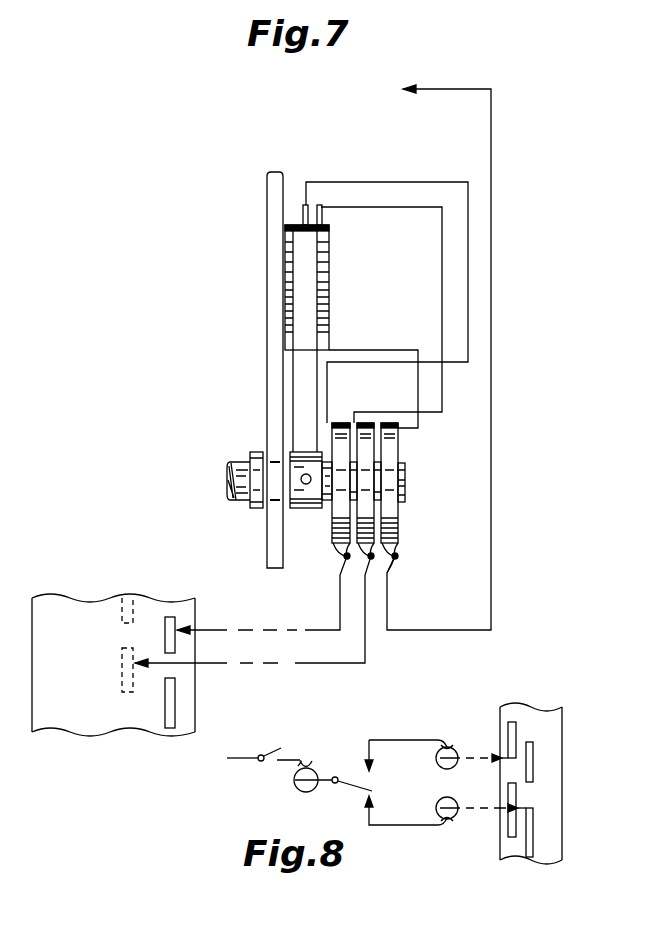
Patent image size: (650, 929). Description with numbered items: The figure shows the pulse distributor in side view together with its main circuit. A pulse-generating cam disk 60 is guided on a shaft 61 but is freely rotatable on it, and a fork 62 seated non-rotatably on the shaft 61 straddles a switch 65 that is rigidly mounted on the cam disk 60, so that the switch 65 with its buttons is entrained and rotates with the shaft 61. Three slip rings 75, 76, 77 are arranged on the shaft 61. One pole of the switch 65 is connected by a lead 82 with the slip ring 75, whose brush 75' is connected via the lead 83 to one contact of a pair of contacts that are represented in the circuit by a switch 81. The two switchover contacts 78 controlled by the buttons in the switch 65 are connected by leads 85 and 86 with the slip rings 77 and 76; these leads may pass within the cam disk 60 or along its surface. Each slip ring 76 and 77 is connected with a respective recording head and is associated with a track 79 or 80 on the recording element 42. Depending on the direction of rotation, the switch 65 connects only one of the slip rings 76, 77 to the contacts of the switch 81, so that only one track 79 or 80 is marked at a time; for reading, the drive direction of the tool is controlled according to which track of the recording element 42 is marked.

In FIG. 7, the recording element 42 is at (56, 722).
In FIG. 8, the recording element 42 is at (562, 763).
In FIG. 7, the cam disk 60 is at (267, 201).
In FIG. 7, the shaft 61 is at (240, 497).
In FIG. 7, the fork 62 is at (302, 388).
In FIG. 7, the switch 65 is at (288, 222).
In FIG. 7, the slip ring 75 is at (398, 475).
In FIG. 8, the slip ring 75 is at (294, 788).
In FIG. 7, the brush 75' is at (415, 580).
In FIG. 7, the slip ring 76 is at (366, 423).
In FIG. 8, the slip ring 76 is at (440, 766).
In FIG. 7, the slip ring 77 is at (341, 423).
In FIG. 8, the slip ring 77 is at (447, 815).
In FIG. 8, the switchover contacts 78 is at (348, 785).
In FIG. 7, the track 79 is at (131, 698).
In FIG. 8, the track 79 is at (508, 734).
In FIG. 7, the track 80 is at (170, 728).
In FIG. 8, the track 80 is at (530, 860).
In FIG. 8, the switch 81 is at (286, 753).
In FIG. 7, the lead 82 is at (378, 350).
In FIG. 7, the lead 83 is at (493, 213).
In FIG. 7, the lead 85 is at (371, 182).
In FIG. 7, the lead 86 is at (380, 208).